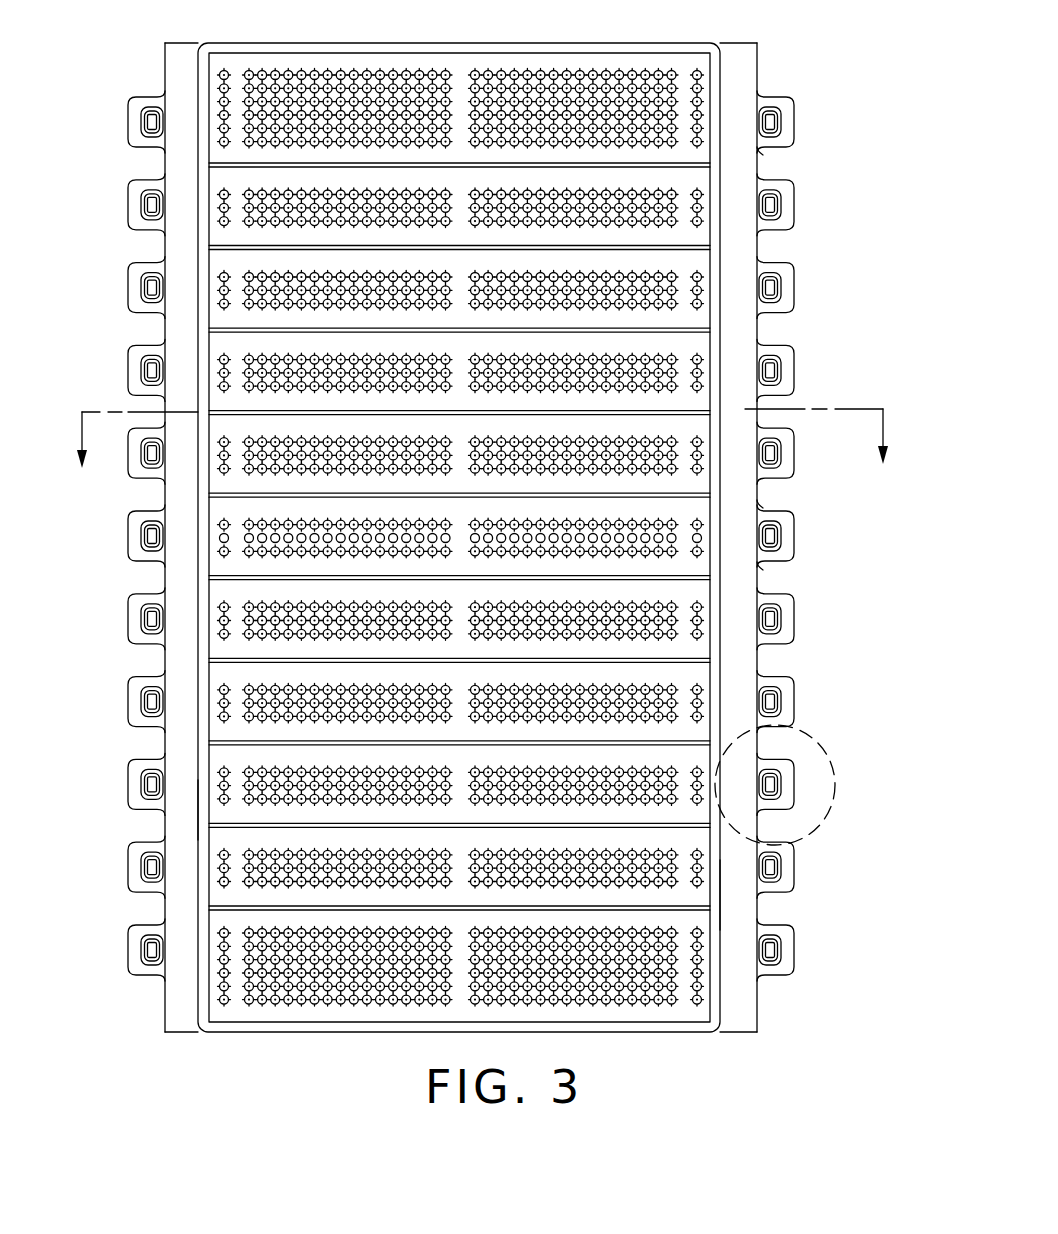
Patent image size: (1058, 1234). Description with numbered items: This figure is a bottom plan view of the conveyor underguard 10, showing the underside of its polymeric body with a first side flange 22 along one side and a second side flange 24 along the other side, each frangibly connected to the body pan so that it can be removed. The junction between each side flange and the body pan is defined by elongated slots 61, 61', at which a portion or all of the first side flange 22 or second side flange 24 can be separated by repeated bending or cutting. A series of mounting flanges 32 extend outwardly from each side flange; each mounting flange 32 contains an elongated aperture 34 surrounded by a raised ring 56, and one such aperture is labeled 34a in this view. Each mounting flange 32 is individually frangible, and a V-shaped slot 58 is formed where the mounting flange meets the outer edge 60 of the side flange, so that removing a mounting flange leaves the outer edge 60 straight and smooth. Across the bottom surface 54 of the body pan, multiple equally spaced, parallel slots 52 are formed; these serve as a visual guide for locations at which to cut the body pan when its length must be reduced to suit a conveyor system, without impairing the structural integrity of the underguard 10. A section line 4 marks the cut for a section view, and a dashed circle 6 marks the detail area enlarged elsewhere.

The conveyor underguard 10 is at (882, 154).
The first side flange 22 is at (745, 655).
The second side flange 24 is at (177, 895).
The mounting flange 32 is at (805, 85).
The elongated aperture 34 is at (770, 110).
The mounting hole 34a is at (790, 540).
The slots 52 is at (688, 253).
The bottom surface 54 is at (694, 317).
The raised ring 56 is at (775, 132).
The V-shaped slot 58 is at (766, 559).
The outer edge 60 is at (766, 490).
The first elongated slot 61 is at (787, 895).
The second elongated slot 61' is at (137, 823).
The detail area of FIG. 6 is at (808, 737).
The section line 4- 4 is at (475, 438).